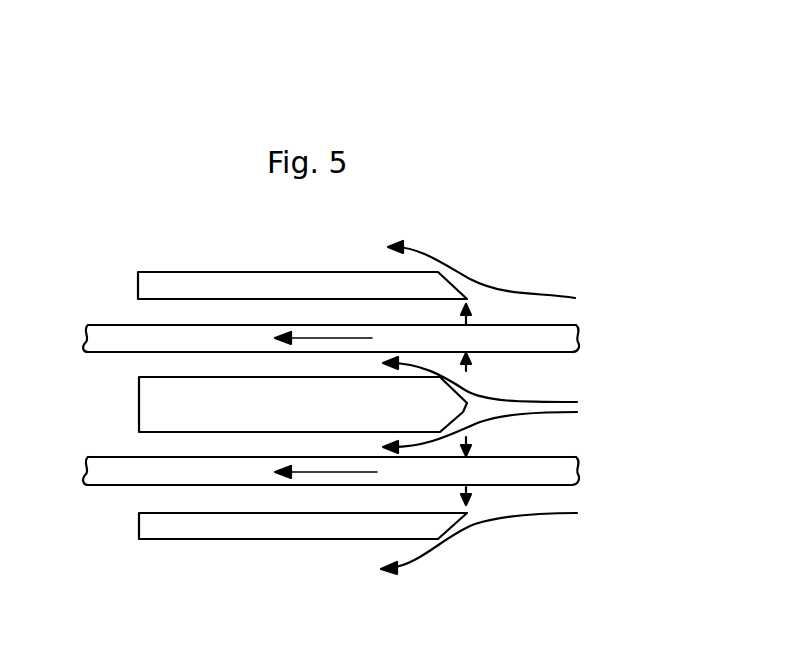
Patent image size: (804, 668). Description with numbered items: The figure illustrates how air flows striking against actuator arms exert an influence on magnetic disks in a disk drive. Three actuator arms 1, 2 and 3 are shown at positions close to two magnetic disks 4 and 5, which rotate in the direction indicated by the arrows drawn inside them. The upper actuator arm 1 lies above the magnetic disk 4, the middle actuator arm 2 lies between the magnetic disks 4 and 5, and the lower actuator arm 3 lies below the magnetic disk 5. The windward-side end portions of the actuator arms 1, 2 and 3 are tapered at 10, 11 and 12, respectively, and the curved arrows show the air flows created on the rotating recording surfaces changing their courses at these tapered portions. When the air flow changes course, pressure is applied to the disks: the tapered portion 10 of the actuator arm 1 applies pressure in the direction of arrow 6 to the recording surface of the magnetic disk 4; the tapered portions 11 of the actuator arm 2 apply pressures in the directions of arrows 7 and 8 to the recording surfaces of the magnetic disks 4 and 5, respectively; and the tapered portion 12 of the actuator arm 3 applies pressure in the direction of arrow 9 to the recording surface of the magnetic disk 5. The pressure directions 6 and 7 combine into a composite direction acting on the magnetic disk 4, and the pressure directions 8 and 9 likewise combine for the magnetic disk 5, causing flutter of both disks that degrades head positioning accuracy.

The actuator arm 1 is at (163, 272).
The actuator arm 2 is at (139, 410).
The actuator arm 3 is at (139, 539).
The magnetic disk 4 is at (98, 325).
The magnetic disk 5 is at (98, 457).
The arrow 6 is at (476, 308).
The arrow 7 is at (477, 368).
The arrow 8 is at (478, 445).
The arrow 9 is at (478, 499).
The tapered portion 10 is at (452, 282).
The tapered portion 11 is at (478, 406).
The tapered portion 12 is at (452, 528).